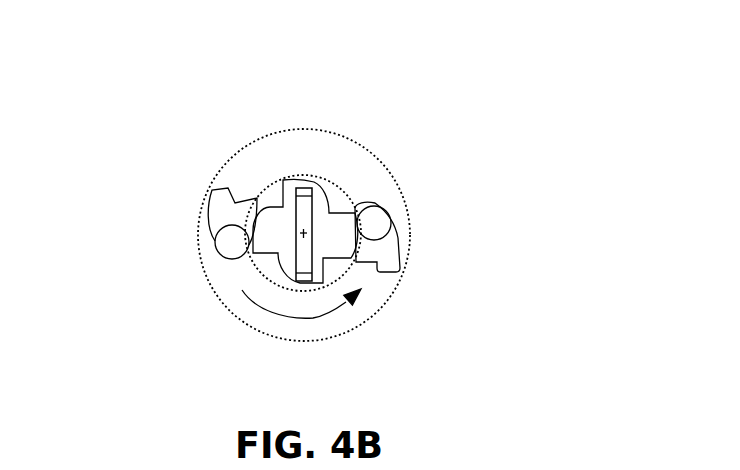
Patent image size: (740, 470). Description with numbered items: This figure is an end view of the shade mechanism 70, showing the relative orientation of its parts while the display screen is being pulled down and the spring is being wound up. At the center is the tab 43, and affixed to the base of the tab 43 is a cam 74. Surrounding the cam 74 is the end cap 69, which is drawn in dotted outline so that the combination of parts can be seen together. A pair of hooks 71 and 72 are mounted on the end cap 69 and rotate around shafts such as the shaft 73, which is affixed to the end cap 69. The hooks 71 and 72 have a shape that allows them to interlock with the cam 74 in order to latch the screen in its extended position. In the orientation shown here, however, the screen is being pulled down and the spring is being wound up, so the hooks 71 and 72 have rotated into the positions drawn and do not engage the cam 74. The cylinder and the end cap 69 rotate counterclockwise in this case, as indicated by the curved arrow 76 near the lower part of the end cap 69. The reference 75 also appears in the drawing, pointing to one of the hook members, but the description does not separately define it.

The tab 43 is at (302, 283).
The end cap 69 is at (287, 128).
The shade mechanism 70 is at (510, 122).
The hook 71 is at (168, 213).
The hook 72 is at (445, 250).
The shaft 73 is at (218, 246).
The cam 74 is at (327, 198).
The cam follower 75 is at (228, 190).
The arrow 76 is at (327, 312).